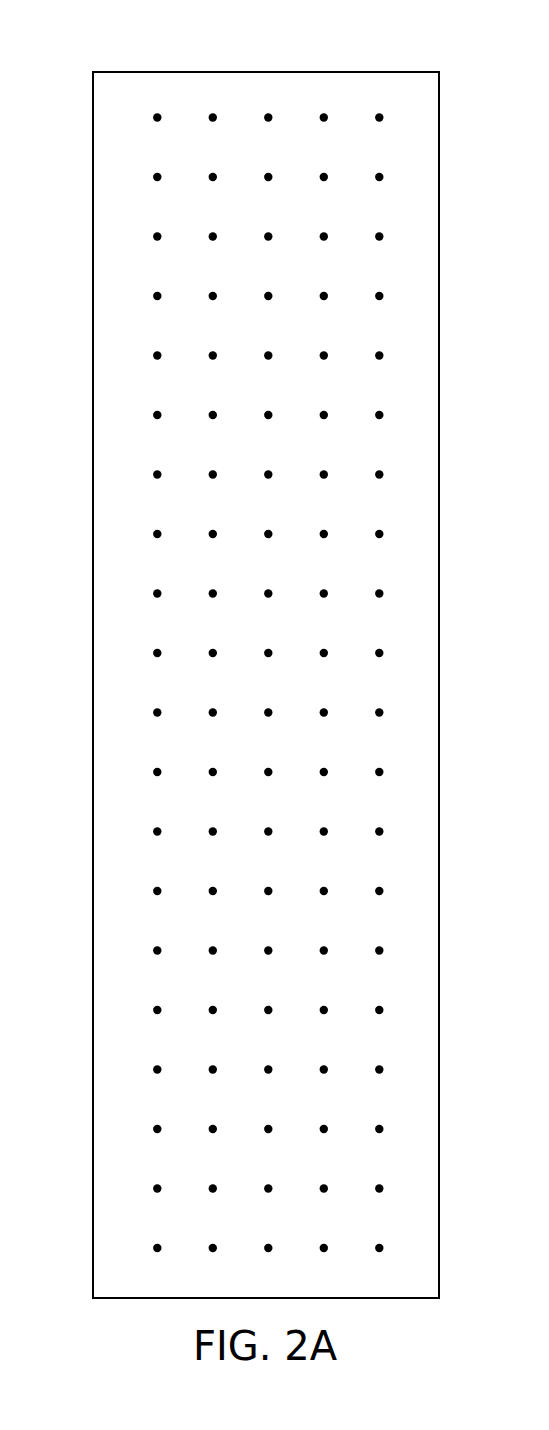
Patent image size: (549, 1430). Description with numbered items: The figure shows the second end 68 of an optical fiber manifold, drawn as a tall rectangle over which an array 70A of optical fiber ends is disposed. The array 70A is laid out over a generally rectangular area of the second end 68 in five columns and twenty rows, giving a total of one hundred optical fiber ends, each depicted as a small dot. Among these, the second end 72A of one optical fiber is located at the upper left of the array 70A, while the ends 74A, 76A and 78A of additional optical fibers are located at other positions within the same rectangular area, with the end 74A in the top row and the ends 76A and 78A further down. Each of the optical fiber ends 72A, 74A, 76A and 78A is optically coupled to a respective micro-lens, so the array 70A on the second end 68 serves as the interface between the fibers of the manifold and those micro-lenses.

The second end of the optical fiber manifold 68 is at (439, 633).
The array of optical fiber ends 70A is at (373, 72).
The second end of the optical fiber 72A is at (157, 115).
The end of additional optical fiber 74A is at (268, 115).
The end of additional optical fiber 76A is at (272, 952).
The end of additional optical fiber 78A is at (157, 950).